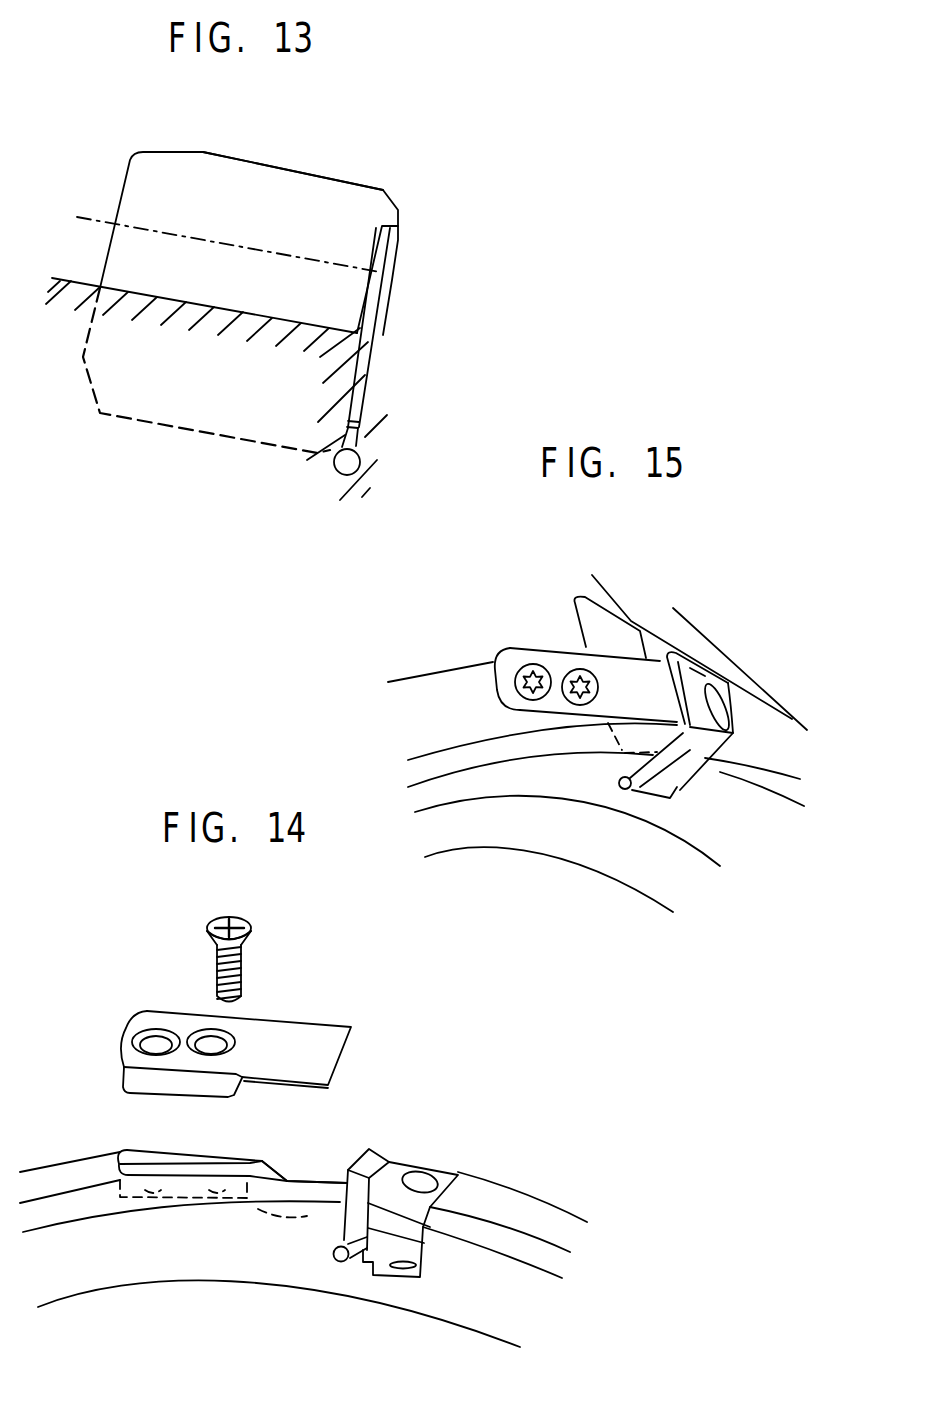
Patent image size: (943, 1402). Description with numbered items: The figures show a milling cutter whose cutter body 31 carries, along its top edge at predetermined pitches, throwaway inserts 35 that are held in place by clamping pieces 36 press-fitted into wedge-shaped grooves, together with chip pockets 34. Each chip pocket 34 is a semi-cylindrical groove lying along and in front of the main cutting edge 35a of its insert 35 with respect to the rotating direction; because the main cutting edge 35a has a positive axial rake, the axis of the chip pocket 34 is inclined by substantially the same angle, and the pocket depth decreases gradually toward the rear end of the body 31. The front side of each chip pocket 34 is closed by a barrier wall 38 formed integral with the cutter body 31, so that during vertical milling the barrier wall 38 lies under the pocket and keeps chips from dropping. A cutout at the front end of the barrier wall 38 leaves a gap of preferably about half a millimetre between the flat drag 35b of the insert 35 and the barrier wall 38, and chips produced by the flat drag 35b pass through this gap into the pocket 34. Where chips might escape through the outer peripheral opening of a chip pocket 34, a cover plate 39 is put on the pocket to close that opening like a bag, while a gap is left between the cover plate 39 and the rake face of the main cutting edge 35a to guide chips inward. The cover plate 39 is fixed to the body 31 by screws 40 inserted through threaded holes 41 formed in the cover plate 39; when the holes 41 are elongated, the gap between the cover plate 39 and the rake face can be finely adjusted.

In FIG. 15, the cutter body 31 is at (473, 835).
In FIG. 14, the cutter body 31 is at (173, 1263).
In FIG. 13, the chip pocket 34 is at (127, 290).
In FIG. 15, the chip pocket 34 is at (582, 606).
In FIG. 14, the chip pocket 34 is at (256, 1176).
In FIG. 13, the throwaway insert 35 is at (268, 184).
In FIG. 15, the throwaway insert 35 is at (683, 745).
In FIG. 14, the throwaway insert 35 is at (368, 1150).
In FIG. 13, the main cutting edge 35a is at (340, 176).
In FIG. 13, the flat drag 35b is at (398, 234).
In FIG. 15, the clamping piece 36 is at (718, 749).
In FIG. 14, the clamping piece 36 is at (455, 1175).
In FIG. 13, the barrier wall 38 is at (374, 302).
In FIG. 15, the barrier wall 38 is at (636, 737).
In FIG. 14, the barrier wall 38 is at (290, 1197).
In FIG. 15, the cover plate 39 is at (516, 651).
In FIG. 14, the cover plate 39 is at (308, 1030).
In FIG. 15, the screw 40 is at (520, 688).
In FIG. 14, the screw 40 is at (245, 971).
In FIG. 14, the threaded hole 41 is at (152, 1044).